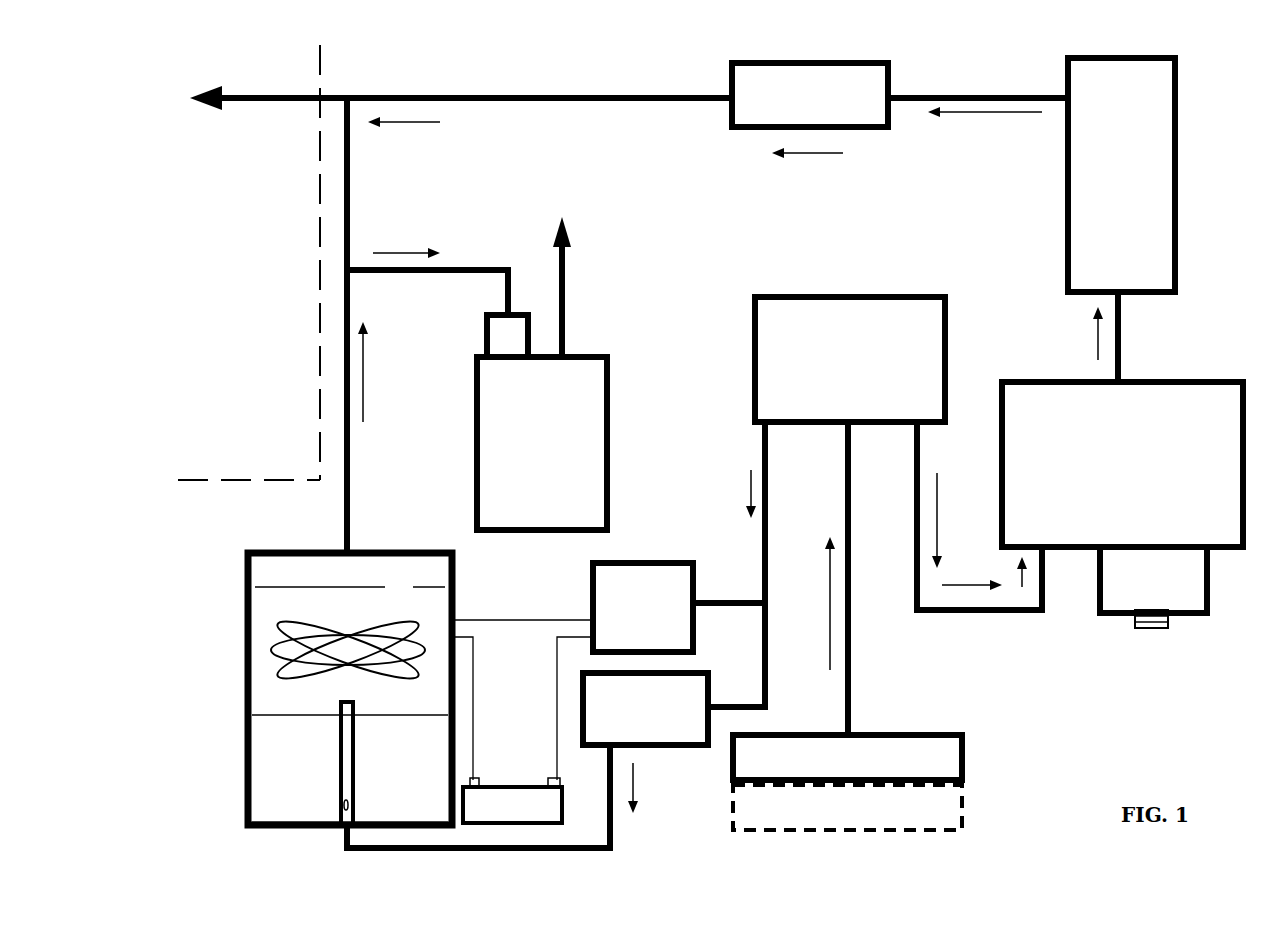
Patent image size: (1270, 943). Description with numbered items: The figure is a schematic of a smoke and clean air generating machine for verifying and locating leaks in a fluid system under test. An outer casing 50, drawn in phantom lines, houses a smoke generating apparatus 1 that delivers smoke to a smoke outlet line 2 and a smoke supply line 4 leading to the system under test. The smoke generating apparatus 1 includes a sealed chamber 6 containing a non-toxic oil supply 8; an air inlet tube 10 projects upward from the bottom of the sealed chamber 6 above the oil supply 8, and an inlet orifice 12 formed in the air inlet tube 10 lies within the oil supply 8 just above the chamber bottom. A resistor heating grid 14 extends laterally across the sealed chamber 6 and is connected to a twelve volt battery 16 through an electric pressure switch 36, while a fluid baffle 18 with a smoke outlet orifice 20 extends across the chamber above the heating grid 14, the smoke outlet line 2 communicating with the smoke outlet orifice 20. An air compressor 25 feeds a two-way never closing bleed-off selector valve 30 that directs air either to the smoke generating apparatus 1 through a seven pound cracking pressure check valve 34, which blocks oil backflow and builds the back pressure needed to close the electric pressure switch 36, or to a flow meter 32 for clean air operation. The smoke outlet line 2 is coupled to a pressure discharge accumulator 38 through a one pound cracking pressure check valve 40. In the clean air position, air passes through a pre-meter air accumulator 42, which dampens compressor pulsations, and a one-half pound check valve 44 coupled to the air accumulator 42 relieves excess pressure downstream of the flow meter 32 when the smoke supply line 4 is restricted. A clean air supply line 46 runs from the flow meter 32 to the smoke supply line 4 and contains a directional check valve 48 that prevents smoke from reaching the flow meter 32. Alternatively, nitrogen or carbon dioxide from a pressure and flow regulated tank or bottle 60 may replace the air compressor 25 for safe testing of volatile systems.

The smoke generating apparatus 1 is at (461, 599).
The smoke outlet line 2 is at (351, 517).
The smoke supply line 4 is at (275, 100).
The sealed chamber 6 is at (250, 710).
The non-toxic oil supply 8 is at (270, 802).
The air inlet tube 10 is at (338, 782).
The inlet orifice 12 is at (353, 802).
The resistor heating grid 14 is at (277, 652).
The battery 16 is at (493, 786).
The fluid baffle 18 is at (302, 587).
The smoke outlet orifice 20 is at (402, 582).
The air compressor 25 is at (965, 750).
The two-way never closing bleed-off selector valve 30 is at (876, 297).
The flow meter 32 is at (1068, 138).
The pressure check valve 34 is at (690, 672).
The electric pressure switch 36 is at (683, 561).
The pressure discharge accumulator 38 is at (607, 396).
The pressure check valve 40 is at (487, 327).
The pre-meter air accumulator 42 is at (1073, 380).
The check valve 44 is at (1098, 600).
The clean air supply line 46 is at (527, 96).
The directional check valve 48 is at (888, 86).
The outer casing 50 is at (307, 358).
The pressure and flow regulated tank or bottle 60 is at (965, 808).